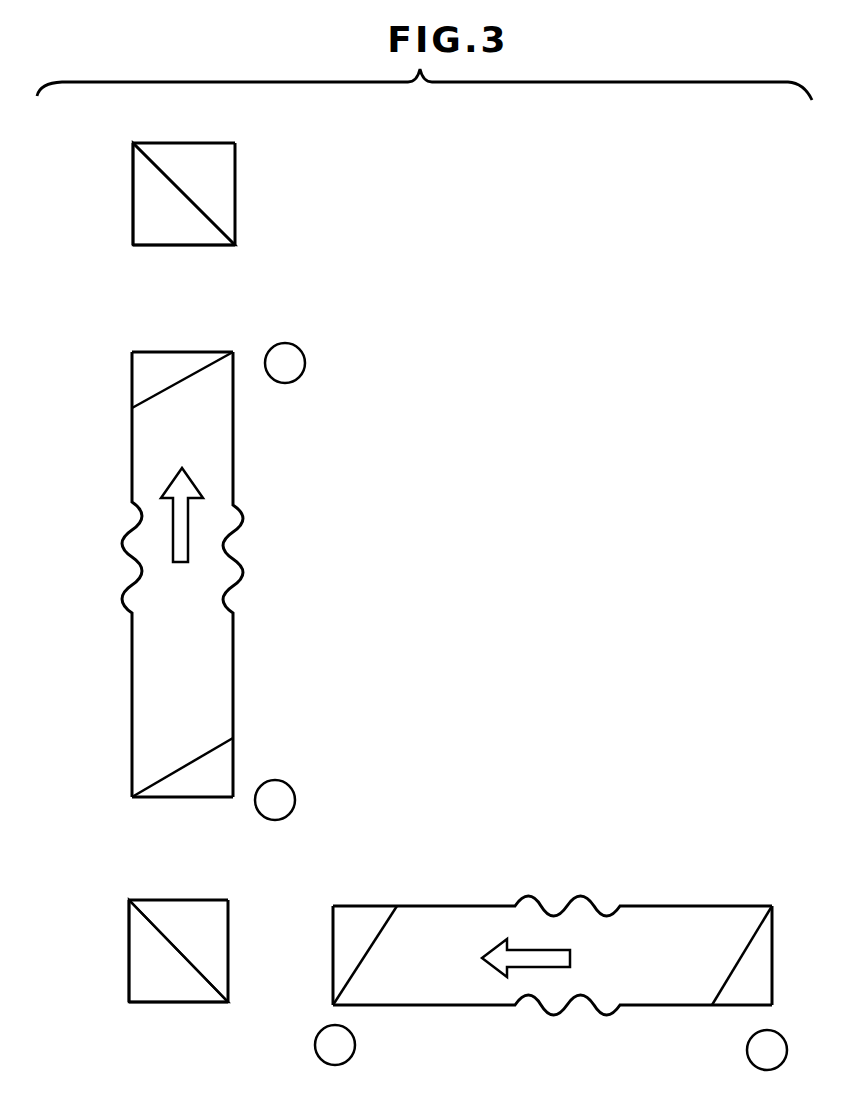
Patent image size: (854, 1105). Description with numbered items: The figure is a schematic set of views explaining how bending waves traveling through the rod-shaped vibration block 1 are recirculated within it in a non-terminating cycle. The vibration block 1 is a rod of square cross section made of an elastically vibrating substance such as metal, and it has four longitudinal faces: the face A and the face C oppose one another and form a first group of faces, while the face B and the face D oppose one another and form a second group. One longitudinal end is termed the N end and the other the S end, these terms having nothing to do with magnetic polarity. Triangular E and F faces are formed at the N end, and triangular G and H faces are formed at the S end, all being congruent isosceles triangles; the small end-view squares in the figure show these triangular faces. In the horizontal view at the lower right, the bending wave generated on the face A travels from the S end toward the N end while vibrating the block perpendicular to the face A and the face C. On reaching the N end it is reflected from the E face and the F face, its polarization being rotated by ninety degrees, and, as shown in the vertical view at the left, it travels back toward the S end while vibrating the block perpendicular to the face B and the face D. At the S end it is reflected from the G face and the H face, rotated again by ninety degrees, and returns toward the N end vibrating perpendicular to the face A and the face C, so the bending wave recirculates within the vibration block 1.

The vibration block 1 is at (669, 926).
The face A is at (450, 580).
The face B is at (253, 572).
The face C is at (450, 578).
The face D is at (107, 572).
The E face E is at (178, 951).
The F face F is at (178, 951).
The G face G is at (184, 194).
The H face H is at (184, 194).
The S end S is at (459, 706).
The N end N is at (264, 901).